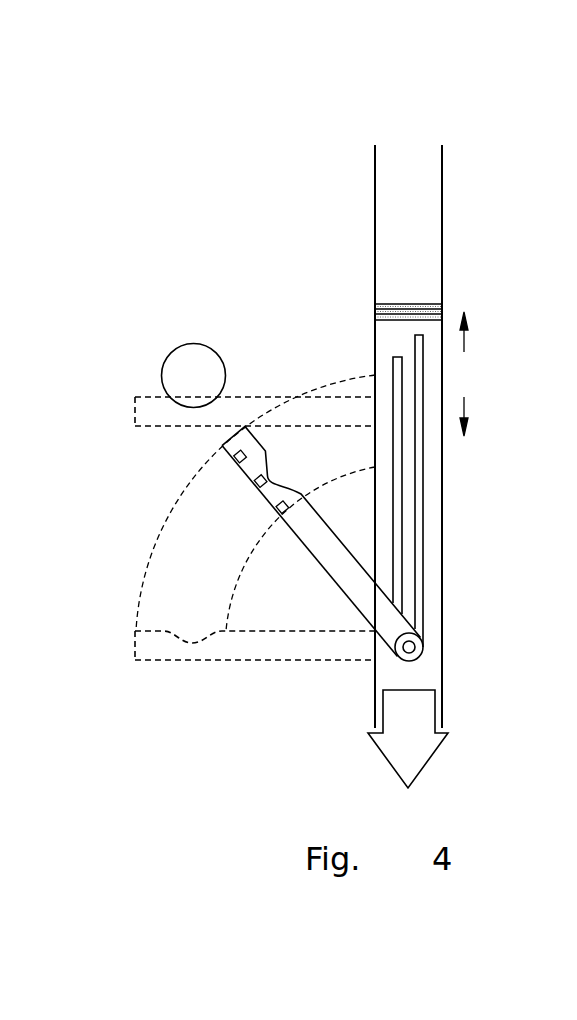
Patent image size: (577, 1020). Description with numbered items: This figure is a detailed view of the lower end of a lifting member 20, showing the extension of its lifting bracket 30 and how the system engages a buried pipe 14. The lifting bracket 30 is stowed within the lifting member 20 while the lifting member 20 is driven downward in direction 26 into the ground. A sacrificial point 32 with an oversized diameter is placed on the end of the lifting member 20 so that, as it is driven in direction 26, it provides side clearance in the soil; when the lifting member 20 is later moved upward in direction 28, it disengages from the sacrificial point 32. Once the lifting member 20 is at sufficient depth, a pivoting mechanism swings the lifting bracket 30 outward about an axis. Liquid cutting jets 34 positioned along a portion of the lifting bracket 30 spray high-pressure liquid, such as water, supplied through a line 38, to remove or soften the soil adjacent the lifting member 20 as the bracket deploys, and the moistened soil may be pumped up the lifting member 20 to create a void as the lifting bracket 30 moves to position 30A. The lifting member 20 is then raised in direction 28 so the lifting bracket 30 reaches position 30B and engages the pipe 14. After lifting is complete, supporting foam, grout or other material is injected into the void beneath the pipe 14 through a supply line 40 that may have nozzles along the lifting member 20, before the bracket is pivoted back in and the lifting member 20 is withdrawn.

The pipe 14 is at (183, 344).
The lifting member 20 is at (462, 263).
The direction 26 is at (464, 410).
The direction 28 is at (464, 340).
The lifting bracket 30 is at (262, 498).
The position of lifting bracket 30A is at (283, 662).
The position of lifting bracket 30B is at (135, 410).
The sacrificial point 32 is at (425, 770).
The liquid cutting jets 34 is at (238, 461).
The line 38 is at (393, 372).
The supply line 40 is at (424, 391).